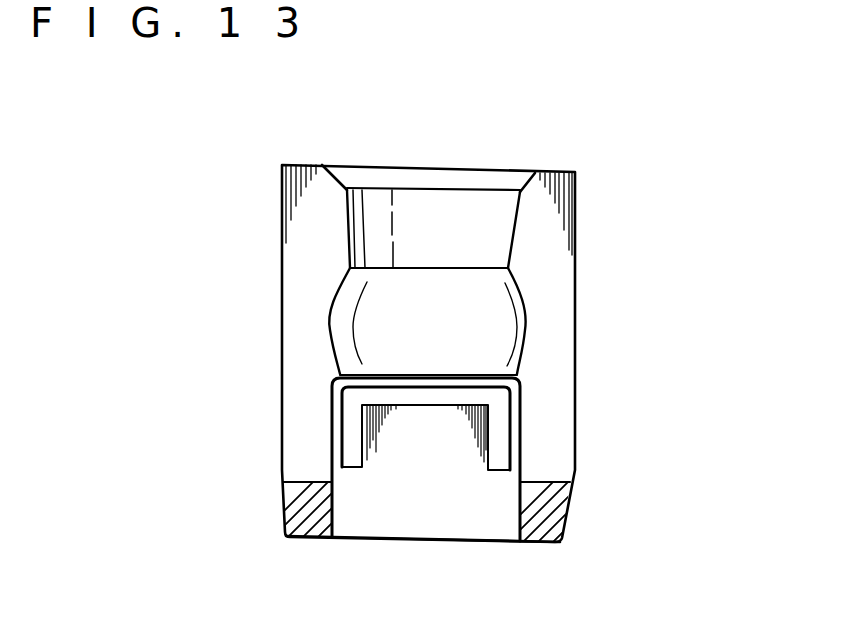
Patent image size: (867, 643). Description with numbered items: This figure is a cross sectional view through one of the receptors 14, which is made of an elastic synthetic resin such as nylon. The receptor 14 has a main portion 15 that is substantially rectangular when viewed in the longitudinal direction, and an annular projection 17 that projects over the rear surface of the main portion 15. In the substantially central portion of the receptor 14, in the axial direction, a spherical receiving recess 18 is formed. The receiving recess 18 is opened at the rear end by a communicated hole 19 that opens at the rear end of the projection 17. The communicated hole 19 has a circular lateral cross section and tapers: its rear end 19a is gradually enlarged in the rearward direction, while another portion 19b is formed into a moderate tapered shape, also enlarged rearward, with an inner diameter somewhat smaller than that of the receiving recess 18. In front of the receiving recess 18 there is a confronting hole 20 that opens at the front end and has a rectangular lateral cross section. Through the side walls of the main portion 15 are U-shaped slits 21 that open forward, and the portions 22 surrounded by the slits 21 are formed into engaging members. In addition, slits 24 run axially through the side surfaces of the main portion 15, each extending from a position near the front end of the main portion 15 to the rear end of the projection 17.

The receptor 14 is at (632, 138).
The main portion 15 is at (576, 273).
The projection 17 is at (310, 165).
The receiving recess 18 is at (510, 332).
The communicated hole 19 is at (505, 229).
The rear end of the communicated hole 19a is at (521, 172).
The portion of the communicated hole 19b is at (350, 228).
The confronting hole 20 is at (332, 506).
The U-shaped slit 21 is at (351, 423).
The engaging member 22 is at (490, 420).
The slit 24 is at (303, 300).